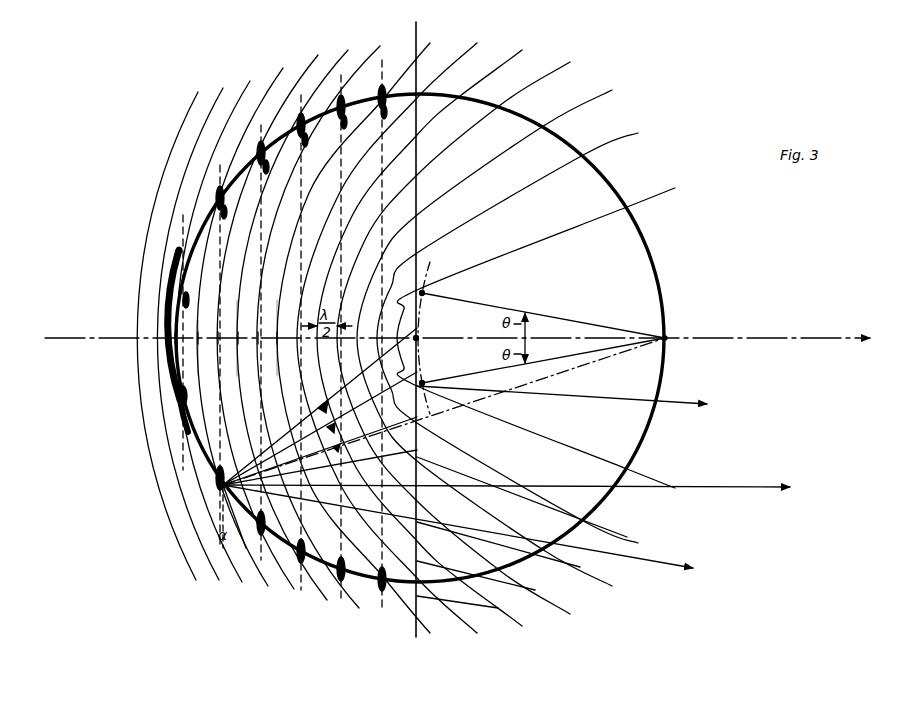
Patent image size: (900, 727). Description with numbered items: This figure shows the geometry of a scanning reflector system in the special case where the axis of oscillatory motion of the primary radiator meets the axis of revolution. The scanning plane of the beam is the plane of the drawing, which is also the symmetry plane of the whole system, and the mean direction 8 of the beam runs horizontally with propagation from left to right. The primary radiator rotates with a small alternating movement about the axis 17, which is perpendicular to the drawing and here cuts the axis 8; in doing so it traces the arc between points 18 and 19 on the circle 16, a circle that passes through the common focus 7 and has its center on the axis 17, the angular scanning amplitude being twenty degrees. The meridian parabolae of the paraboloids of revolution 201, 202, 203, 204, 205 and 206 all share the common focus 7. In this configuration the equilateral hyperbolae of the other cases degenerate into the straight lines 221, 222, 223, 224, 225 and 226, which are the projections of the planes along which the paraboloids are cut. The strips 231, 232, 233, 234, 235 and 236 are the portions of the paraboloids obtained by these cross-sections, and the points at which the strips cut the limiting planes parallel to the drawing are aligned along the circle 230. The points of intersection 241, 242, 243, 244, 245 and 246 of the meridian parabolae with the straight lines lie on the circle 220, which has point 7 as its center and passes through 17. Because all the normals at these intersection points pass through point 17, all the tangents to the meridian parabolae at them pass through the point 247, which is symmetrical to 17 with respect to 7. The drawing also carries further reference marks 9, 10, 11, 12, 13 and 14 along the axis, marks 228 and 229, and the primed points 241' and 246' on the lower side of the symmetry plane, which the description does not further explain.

The common focus 7 is at (420, 338).
The mean direction of the beam 8 is at (798, 340).
The axis point 9 is at (279, 340).
The axis point 10 is at (260, 340).
The axis point 11 is at (240, 340).
The axis point 12 is at (219, 340).
The axis point 13 is at (200, 336).
The axis point 14 is at (172, 334).
The circle 16 is at (434, 270).
The axis of rotation 17 is at (668, 334).
The arc end point 18 is at (428, 296).
The arc end point 19 is at (424, 380).
The paraboloid of revolution 201 is at (426, 52).
The paraboloid of revolution 202 is at (382, 56).
The paraboloid of revolution 203 is at (348, 60).
The paraboloid of revolution 204 is at (312, 60).
The paraboloid of revolution 205 is at (282, 76).
The paraboloid of revolution 206 is at (240, 88).
The circle 220 is at (538, 120).
The straight line 221 is at (376, 182).
The straight line 222 is at (338, 212).
The straight line 223 is at (302, 240).
The straight line 224 is at (272, 326).
The straight line 225 is at (230, 338).
The straight line 226 is at (192, 340).
The ray 228 is at (650, 560).
The ray 229 is at (678, 408).
The circle 230 is at (408, 104).
The strip 231 is at (380, 116).
The strip 232 is at (342, 128).
The strip 233 is at (303, 146).
The strip 234 is at (265, 174).
The strip 235 is at (223, 220).
The strip 236 is at (188, 298).
The point of intersection 241 is at (365, 88).
The element 241' is at (367, 597).
The point of intersection 242 is at (340, 104).
The point of intersection 243 is at (300, 122).
The point of intersection 244 is at (260, 150).
The point of intersection 245 is at (218, 195).
The point of intersection 246 is at (160, 324).
The element 246' is at (150, 434).
The symmetrical point 247 is at (176, 344).